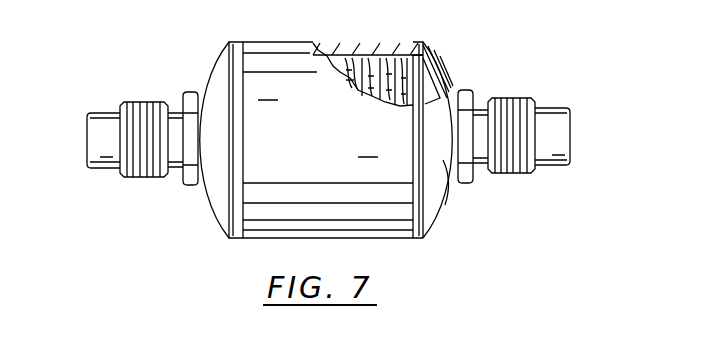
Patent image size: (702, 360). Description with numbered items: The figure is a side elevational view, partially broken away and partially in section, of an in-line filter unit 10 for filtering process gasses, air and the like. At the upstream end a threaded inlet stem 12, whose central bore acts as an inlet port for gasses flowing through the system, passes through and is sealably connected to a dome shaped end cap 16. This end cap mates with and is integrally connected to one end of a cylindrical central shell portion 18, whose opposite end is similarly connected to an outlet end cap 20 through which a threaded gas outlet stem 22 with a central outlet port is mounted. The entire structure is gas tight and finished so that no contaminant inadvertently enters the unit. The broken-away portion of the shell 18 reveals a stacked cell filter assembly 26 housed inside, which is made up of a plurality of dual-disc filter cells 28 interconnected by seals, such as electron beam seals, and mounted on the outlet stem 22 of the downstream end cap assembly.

The filter unit 10 is at (173, 72).
The threaded inlet stem 12 is at (100, 168).
The dome shaped end cap 16 is at (215, 200).
The cylindrical central shell portion 18 is at (267, 42).
The dual-disc filter cells 28 is at (343, 58).
The stacked cell filter assembly 26 is at (385, 58).
The outlet end cap 20 is at (437, 212).
The threaded gas outlet stem 22 is at (553, 108).